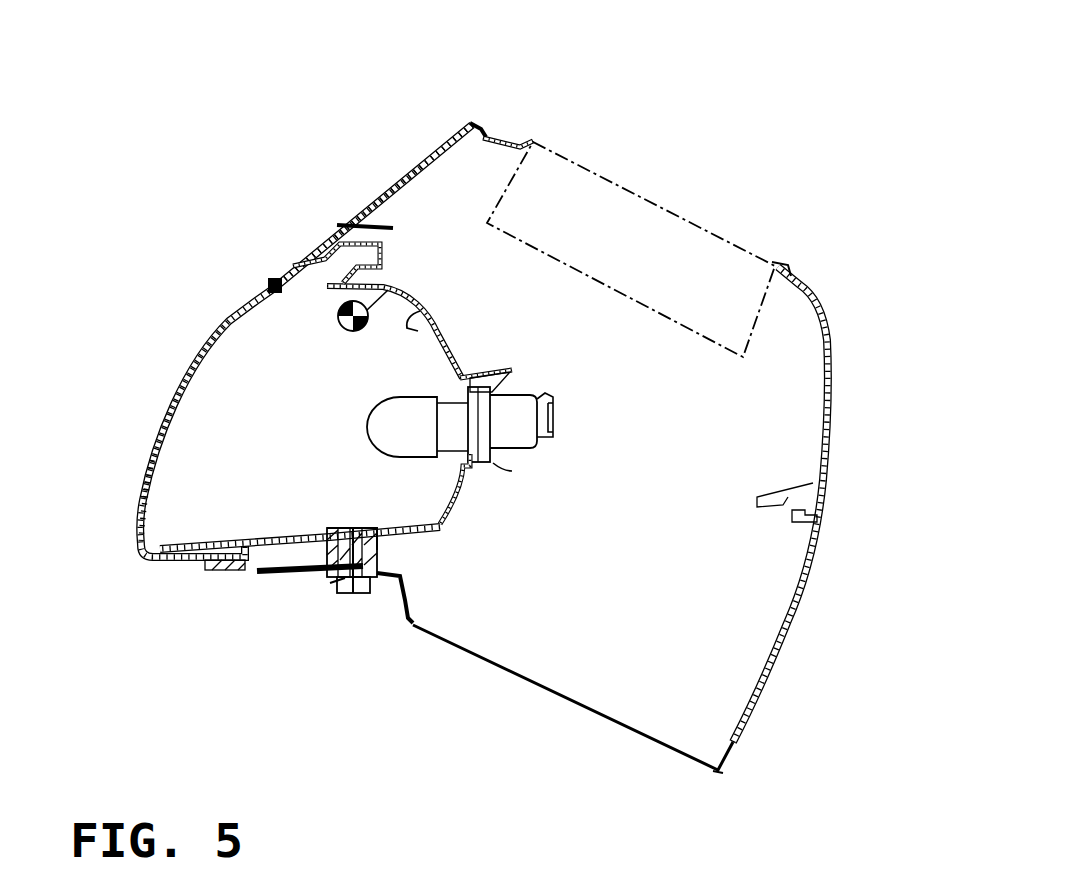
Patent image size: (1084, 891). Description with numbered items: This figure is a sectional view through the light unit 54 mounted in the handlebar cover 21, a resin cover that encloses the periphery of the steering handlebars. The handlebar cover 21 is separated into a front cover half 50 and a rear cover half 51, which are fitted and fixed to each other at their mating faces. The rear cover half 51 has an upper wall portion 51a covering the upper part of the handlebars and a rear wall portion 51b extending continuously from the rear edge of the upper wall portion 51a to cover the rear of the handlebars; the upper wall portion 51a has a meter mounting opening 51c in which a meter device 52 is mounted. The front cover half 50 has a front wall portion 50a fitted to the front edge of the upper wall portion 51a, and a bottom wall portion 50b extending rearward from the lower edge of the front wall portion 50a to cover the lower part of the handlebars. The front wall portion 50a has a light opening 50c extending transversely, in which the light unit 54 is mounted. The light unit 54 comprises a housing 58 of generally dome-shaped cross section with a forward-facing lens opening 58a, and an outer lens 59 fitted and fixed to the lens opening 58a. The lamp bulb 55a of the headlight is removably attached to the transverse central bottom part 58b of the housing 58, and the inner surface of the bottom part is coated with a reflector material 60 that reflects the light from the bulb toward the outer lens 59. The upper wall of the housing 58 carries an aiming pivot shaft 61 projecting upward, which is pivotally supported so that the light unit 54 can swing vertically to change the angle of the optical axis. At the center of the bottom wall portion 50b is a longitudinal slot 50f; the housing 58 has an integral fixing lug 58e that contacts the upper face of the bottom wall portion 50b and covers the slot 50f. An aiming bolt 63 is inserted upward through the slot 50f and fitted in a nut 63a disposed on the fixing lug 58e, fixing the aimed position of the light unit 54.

The handlebar cover 21 is at (337, 167).
The front cover half 50 is at (408, 158).
The front wall portion 50a is at (360, 197).
The bottom wall portion 50b is at (287, 573).
The light opening 50c is at (268, 290).
The slot 50f is at (333, 579).
The rear cover half 51 is at (840, 423).
The upper wall portion 51a is at (502, 138).
The rear wall portion 51b is at (817, 572).
The meter mounting opening 51c is at (775, 265).
The meter device 52 is at (737, 235).
The light unit 54 is at (190, 333).
The lamp bulb 55a is at (392, 452).
The housing 58 is at (453, 329).
The lens opening 58a is at (197, 562).
The central bottom part 58b is at (470, 483).
The fixing lug 58e is at (423, 562).
The outer lens 59 is at (153, 430).
The reflector material 60 is at (412, 317).
The aiming pivot shaft 61 is at (388, 290).
The aiming bolt 63 is at (350, 593).
The nut 63a is at (373, 552).